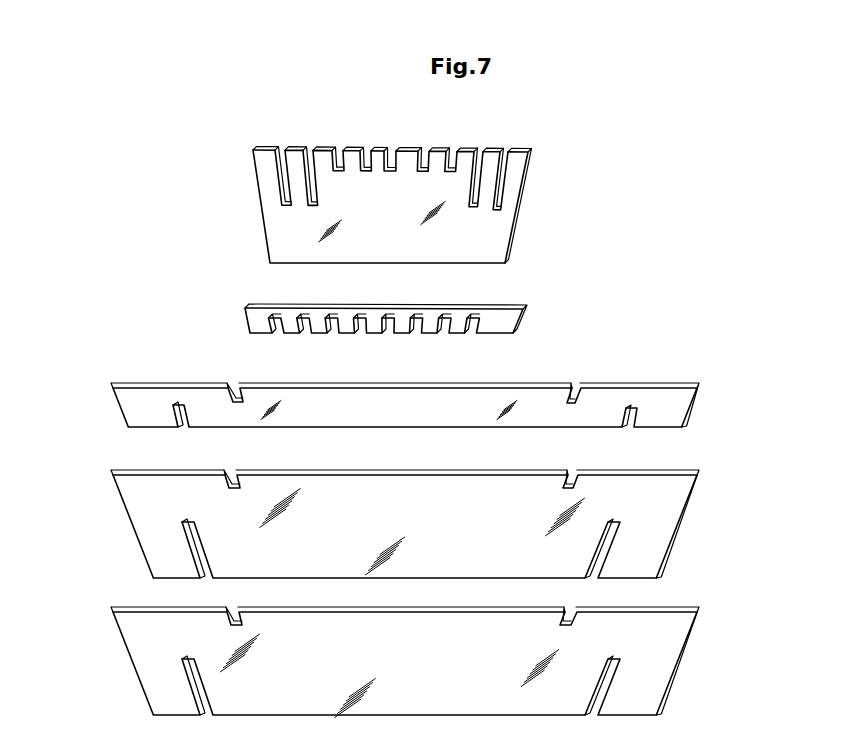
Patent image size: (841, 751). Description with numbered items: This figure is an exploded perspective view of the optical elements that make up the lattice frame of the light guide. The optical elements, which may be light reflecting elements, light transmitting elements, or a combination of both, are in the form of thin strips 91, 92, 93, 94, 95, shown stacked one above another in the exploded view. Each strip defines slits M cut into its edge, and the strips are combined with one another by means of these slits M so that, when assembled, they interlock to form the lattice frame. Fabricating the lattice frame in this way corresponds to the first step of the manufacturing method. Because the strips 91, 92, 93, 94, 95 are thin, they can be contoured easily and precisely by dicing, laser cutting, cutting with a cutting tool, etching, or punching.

The slit M is at (503, 183).
The strip 91 is at (507, 217).
The strip 92 is at (518, 323).
The strip 93 is at (680, 407).
The strip 94 is at (667, 512).
The strip 95 is at (665, 657).